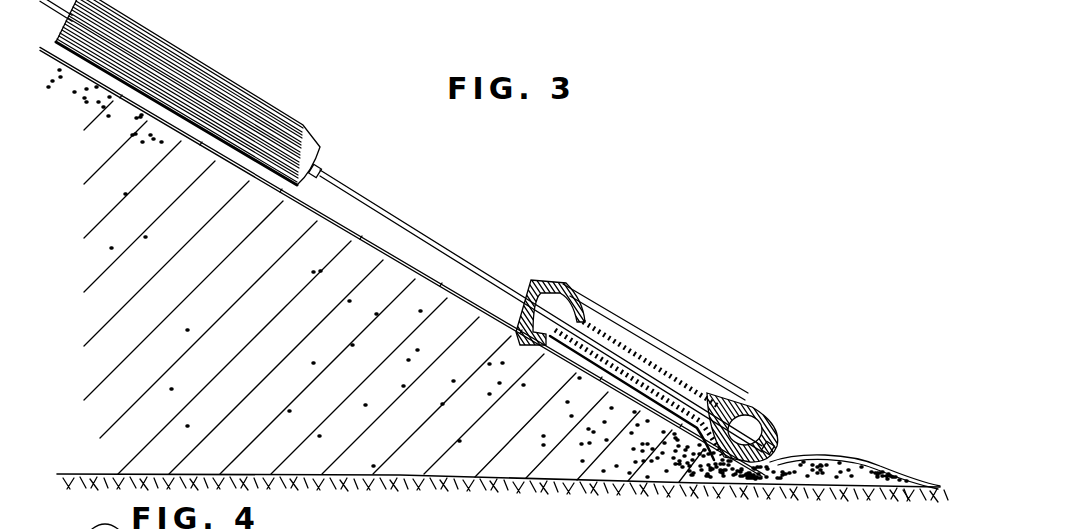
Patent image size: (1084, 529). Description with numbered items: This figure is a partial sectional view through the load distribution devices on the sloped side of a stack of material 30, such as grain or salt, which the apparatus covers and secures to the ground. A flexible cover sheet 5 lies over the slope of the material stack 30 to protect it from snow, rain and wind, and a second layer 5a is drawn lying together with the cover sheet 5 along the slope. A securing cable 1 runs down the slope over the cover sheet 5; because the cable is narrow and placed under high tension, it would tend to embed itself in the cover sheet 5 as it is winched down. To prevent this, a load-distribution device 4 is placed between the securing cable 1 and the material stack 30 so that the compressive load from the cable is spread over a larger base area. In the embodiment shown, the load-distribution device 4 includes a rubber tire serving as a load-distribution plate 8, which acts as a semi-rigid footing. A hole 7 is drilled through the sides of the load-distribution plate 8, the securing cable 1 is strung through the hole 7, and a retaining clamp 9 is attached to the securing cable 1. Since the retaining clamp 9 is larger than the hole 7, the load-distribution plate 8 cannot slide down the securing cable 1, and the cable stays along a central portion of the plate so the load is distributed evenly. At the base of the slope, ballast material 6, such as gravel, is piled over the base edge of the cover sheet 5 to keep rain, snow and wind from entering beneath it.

The securing cable 1 is at (413, 233).
The load-distribution device 4 is at (294, 114).
The cover sheet 5 is at (433, 282).
The underlayer of sheet 5a is at (493, 316).
The ballast material 6 is at (853, 462).
The hole 7 is at (526, 291).
The load-distribution plate 8 is at (231, 99).
The retaining clamp 9 is at (320, 172).
The stack of material 30 is at (438, 456).